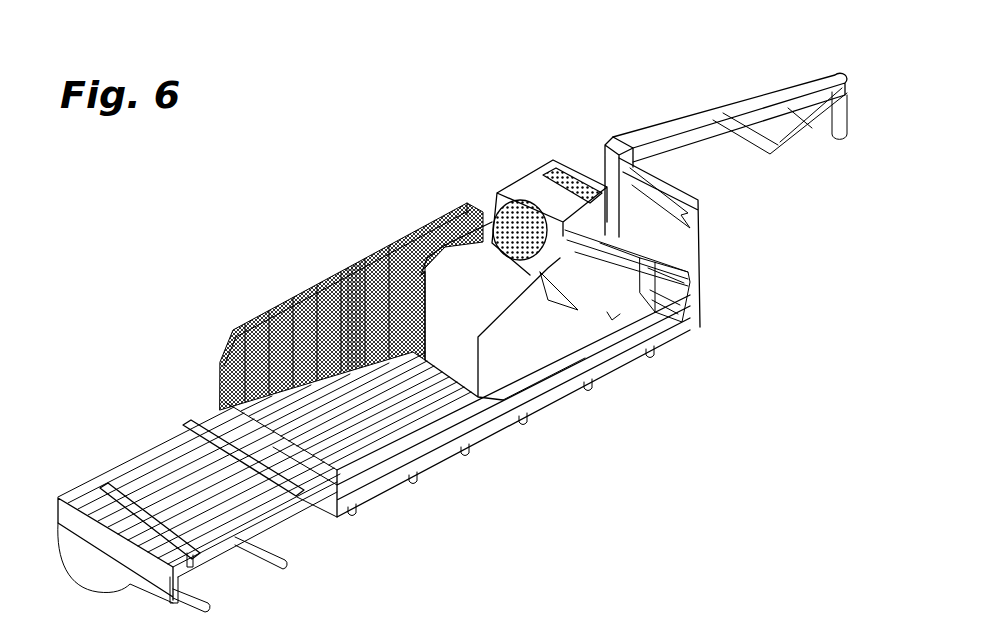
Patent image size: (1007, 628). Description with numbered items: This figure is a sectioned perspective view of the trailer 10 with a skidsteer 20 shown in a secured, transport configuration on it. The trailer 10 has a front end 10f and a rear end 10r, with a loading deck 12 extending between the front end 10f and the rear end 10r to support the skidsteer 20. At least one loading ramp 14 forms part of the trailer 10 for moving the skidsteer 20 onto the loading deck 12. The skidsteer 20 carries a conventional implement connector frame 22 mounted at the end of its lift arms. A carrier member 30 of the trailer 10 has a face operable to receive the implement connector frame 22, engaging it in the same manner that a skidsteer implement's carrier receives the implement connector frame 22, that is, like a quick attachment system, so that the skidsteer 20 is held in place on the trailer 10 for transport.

The trailer 10 is at (518, 67).
The rear end 10r is at (70, 463).
The front end 10f is at (632, 130).
The loading deck 12 is at (487, 440).
The loading ramp 14 is at (307, 280).
The skidsteer 20 is at (463, 166).
The implement connector frame 22 is at (677, 307).
The carrier member 30 is at (690, 280).